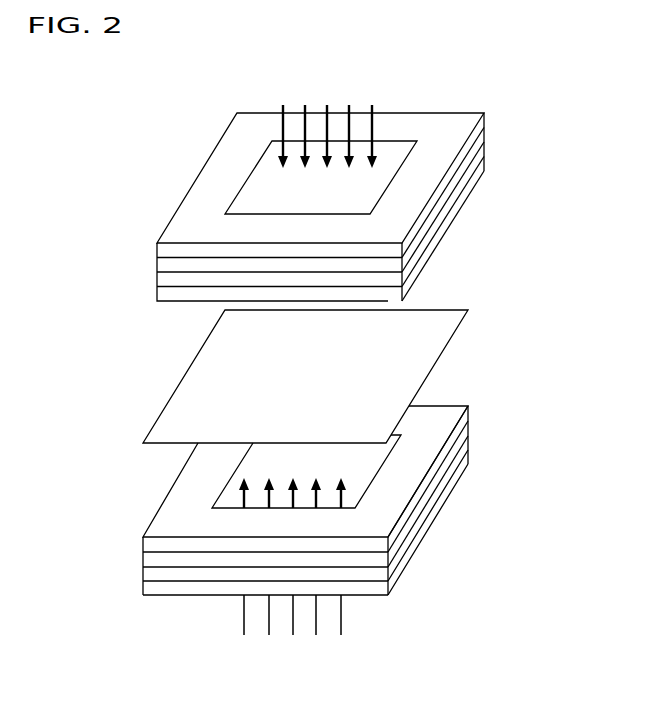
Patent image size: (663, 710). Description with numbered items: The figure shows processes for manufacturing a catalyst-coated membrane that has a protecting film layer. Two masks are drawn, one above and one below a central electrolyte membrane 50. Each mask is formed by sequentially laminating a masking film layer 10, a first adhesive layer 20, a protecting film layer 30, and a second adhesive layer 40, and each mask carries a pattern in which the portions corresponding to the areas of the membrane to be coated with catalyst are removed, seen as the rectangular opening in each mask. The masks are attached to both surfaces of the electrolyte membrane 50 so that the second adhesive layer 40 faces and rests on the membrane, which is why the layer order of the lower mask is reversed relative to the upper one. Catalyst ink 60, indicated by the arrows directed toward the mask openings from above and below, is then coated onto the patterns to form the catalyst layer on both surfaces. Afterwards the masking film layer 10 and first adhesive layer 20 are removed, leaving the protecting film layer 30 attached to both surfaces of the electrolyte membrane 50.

The masking film layer 10 is at (462, 169).
The first adhesive layer 20 is at (454, 204).
The protecting film layer 30 is at (446, 233).
The second adhesive layer 40 is at (438, 264).
The electrolyte membrane 50 is at (468, 339).
The catalyst ink 60 is at (308, 367).